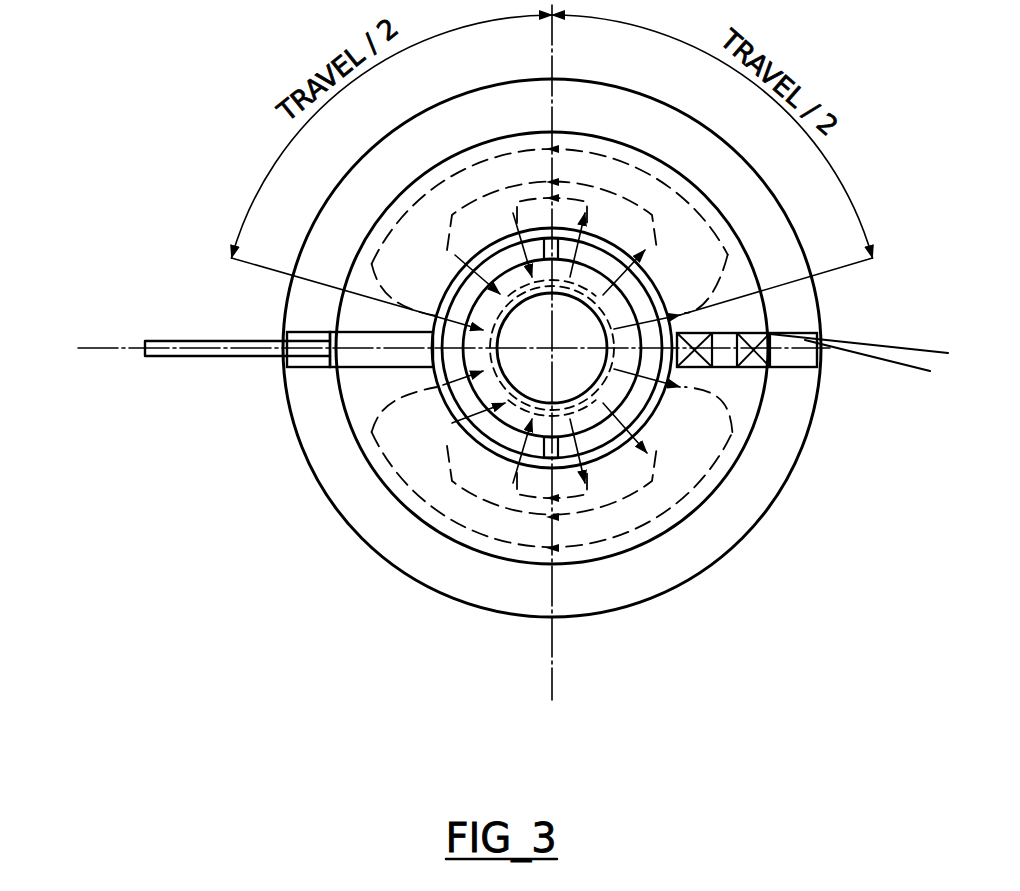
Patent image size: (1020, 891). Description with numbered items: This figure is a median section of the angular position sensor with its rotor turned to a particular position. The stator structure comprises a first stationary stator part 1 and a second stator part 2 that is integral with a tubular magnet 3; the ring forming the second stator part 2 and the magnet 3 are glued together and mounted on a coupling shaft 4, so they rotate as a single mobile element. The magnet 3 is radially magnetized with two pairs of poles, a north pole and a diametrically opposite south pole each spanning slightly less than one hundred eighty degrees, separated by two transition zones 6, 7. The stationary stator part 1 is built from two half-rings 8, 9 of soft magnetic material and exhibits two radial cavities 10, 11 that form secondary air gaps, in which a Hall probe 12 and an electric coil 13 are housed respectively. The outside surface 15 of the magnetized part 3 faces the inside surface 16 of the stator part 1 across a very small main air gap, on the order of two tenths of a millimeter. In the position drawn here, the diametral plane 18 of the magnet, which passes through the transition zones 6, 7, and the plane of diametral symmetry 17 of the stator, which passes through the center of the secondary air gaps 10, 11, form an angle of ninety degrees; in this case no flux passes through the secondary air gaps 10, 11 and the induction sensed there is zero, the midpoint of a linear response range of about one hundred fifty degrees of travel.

The first stationary stator part 1 is at (688, 465).
The second stator part 2 is at (485, 392).
The tubular magnet 3 is at (645, 308).
The coupling shaft 4 is at (533, 380).
The transition zone 6 is at (583, 535).
The transition zone 7 is at (540, 238).
The half-ring 8 is at (621, 181).
The half-ring 9 is at (590, 548).
The radial cavity 10 is at (380, 368).
The radial cavity 11 is at (726, 369).
The Hall probe 12 is at (350, 357).
The electric coil 13 is at (767, 368).
The outside surface of magnetized part 15 is at (484, 252).
The inside surface of stator part 16 is at (442, 282).
The plane of diametral symmetry of the stator 17 is at (104, 352).
The diametral plane of the magnet 18 is at (547, 680).